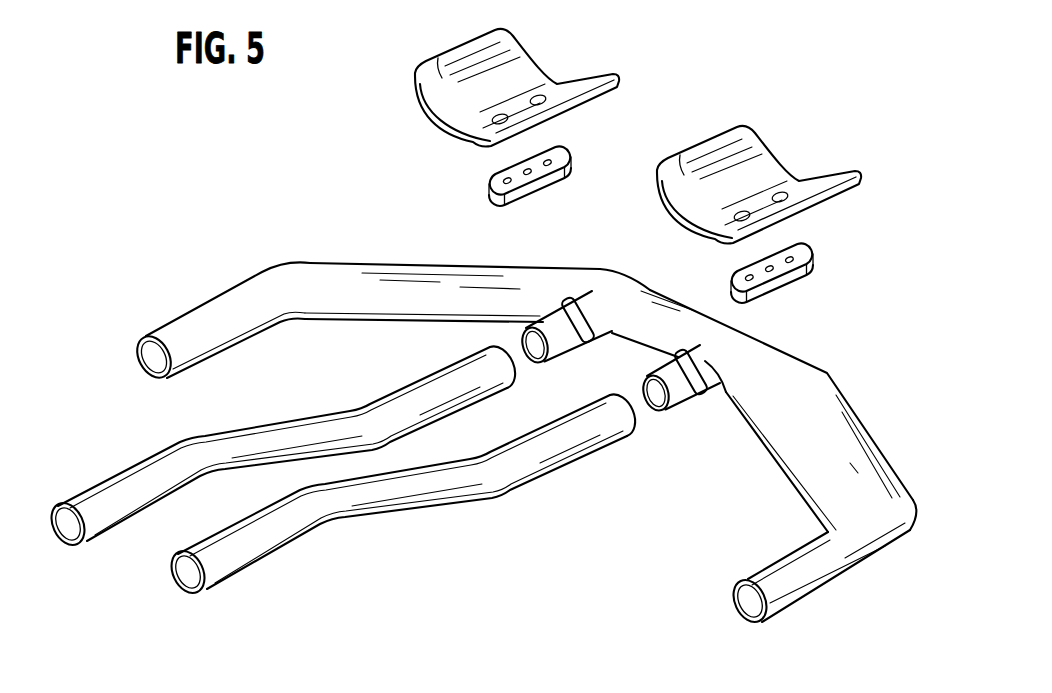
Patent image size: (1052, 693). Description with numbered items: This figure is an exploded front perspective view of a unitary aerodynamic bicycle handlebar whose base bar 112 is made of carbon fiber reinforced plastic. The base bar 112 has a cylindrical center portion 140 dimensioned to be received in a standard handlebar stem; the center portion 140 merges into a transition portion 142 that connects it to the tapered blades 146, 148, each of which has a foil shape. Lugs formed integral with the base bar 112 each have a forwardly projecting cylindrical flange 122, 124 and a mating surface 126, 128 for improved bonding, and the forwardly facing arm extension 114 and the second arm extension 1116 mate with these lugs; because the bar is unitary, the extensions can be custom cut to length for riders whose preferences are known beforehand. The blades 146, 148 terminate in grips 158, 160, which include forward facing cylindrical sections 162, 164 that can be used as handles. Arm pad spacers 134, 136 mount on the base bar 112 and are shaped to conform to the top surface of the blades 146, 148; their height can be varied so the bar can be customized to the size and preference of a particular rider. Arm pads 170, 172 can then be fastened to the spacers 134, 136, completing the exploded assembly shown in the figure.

The base bar 112 is at (832, 375).
The arm extension 114 is at (115, 492).
The second extension tube 1116 is at (445, 500).
The cylindrical flange 122 is at (520, 337).
The cylindrical flange 124 is at (652, 410).
The mating surface 126 is at (607, 298).
The mating surface 128 is at (733, 362).
The arm pad spacer 134 is at (488, 201).
The arm pad spacer 136 is at (792, 280).
The cylindrical center portion 140 is at (667, 323).
The transition portion 142 is at (533, 295).
The tapered blade 146 is at (503, 248).
The tapered blade 148 is at (850, 457).
The grip 158 is at (240, 282).
The grip 160 is at (840, 567).
The cylindrical section 162 is at (203, 305).
The cylindrical section 164 is at (790, 603).
The arm pad 170 is at (442, 72).
The arm pad 172 is at (760, 163).